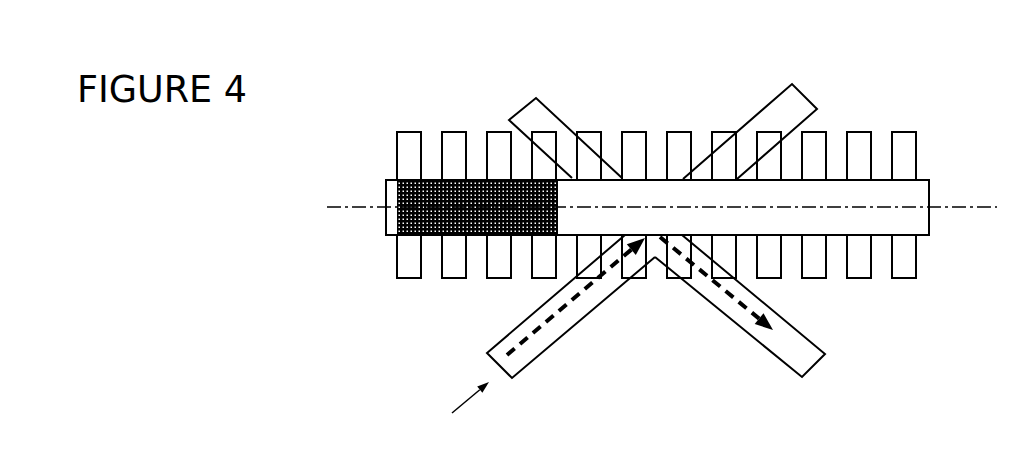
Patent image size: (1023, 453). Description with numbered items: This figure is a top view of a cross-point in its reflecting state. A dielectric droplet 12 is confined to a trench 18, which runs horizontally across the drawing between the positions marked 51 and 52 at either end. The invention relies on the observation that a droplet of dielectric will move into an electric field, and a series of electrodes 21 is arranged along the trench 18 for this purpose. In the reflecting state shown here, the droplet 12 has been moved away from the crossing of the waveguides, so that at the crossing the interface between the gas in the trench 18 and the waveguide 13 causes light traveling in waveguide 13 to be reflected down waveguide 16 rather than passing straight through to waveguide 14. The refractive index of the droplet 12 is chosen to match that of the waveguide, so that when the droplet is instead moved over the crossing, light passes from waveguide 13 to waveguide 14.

The dielectric droplet 12 is at (398, 228).
The waveguide 13 is at (503, 371).
The waveguide 14 is at (800, 102).
The waveguide 16 is at (795, 371).
The trench 18 is at (655, 249).
The electrode grating 21 is at (635, 114).
The first end reference 51 is at (339, 194).
The second end reference 52 is at (974, 195).